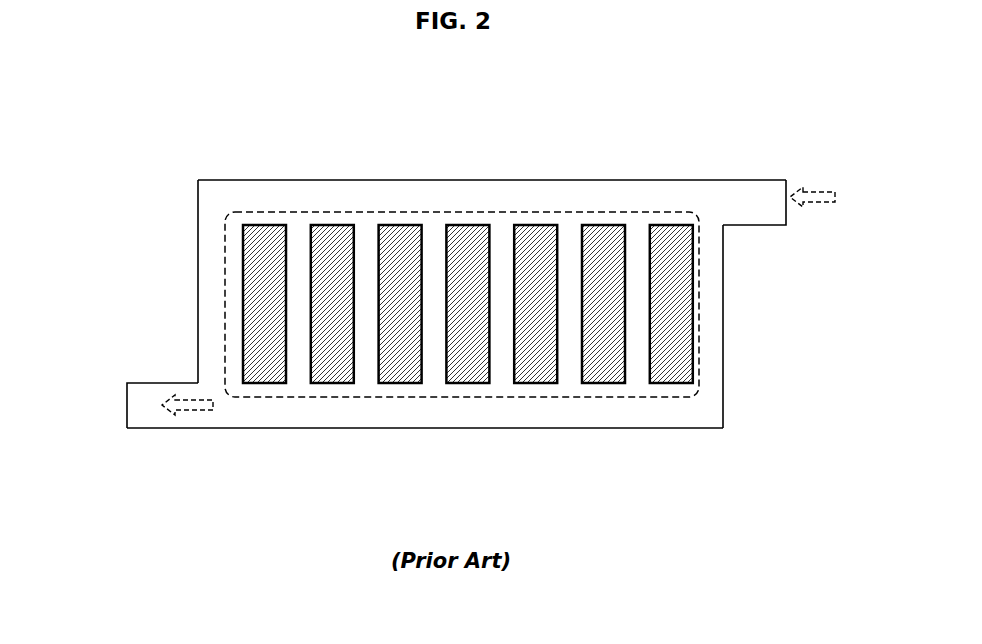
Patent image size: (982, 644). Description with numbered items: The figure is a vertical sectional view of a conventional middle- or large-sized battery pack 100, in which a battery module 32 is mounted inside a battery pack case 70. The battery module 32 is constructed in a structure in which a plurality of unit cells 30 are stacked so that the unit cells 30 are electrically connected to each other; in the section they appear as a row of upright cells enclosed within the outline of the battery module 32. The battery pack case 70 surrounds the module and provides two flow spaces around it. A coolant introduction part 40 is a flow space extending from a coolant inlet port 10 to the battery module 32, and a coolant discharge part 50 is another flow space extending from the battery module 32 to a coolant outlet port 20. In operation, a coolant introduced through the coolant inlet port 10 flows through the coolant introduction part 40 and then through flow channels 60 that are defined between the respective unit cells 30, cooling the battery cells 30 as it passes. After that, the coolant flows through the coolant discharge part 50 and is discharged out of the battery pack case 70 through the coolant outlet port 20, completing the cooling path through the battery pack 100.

The middle- or large-sized battery pack 100 is at (40, 97).
The coolant inlet port 10 is at (786, 220).
The coolant outlet port 20 is at (127, 403).
The unit cells 30 is at (270, 372).
The battery module 32 is at (642, 211).
The coolant introduction part 40 is at (748, 205).
The coolant discharge part 50 is at (458, 410).
The flow channels 60 is at (567, 226).
The battery pack case 70 is at (311, 176).